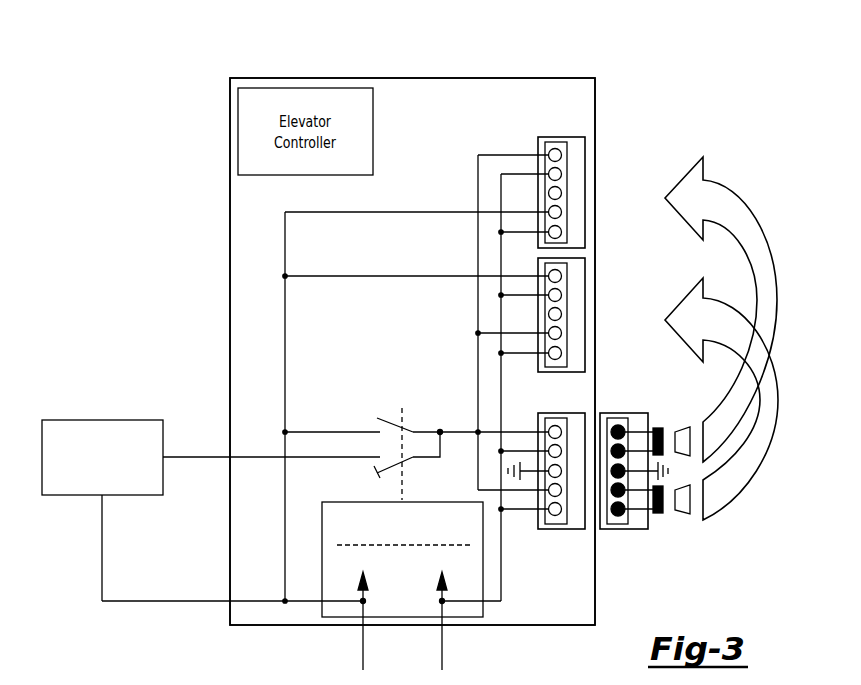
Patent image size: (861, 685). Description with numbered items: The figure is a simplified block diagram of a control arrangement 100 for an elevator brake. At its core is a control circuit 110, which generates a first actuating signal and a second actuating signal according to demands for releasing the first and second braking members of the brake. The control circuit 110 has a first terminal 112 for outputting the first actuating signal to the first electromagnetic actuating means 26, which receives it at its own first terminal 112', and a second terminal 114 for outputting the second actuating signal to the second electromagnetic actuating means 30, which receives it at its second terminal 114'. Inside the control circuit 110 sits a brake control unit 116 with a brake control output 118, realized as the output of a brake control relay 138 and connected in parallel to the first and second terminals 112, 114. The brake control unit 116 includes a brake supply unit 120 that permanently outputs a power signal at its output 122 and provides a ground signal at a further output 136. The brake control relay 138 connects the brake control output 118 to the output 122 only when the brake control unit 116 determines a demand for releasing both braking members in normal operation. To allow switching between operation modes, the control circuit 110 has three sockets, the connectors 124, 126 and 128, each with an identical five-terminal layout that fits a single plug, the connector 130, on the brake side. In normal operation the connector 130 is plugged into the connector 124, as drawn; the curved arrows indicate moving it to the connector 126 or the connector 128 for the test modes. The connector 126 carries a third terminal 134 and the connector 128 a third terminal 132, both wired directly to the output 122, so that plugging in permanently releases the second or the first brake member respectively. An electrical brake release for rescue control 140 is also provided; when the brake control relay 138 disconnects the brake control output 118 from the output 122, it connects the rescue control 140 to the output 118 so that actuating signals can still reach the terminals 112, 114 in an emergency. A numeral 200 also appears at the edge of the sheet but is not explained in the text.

The control arrangement 100 is at (233, 46).
The control circuit 110 is at (400, 79).
The first terminal 112 is at (595, 441).
The first terminal 112' is at (639, 526).
The second terminal 114 is at (595, 290).
The second terminal 114' is at (620, 408).
The brake control unit 116 is at (322, 515).
The brake control output 118 is at (440, 430).
The brake supply unit 120 is at (402, 600).
The output 122 is at (363, 603).
The connector 124 is at (547, 535).
The connector 126 is at (538, 371).
The connector 128 is at (540, 137).
The connector 130 is at (624, 529).
The third terminal 132 is at (562, 212).
The third terminal 134 is at (562, 276).
The further output 136 is at (442, 603).
The brake control relay 138 is at (383, 418).
The electrical brake release for rescue control 140 is at (103, 420).
The first electromagnetic actuating means 26 is at (664, 514).
The second electromagnetic actuating means 30 is at (658, 428).
The elevator system 200 is at (212, 683).